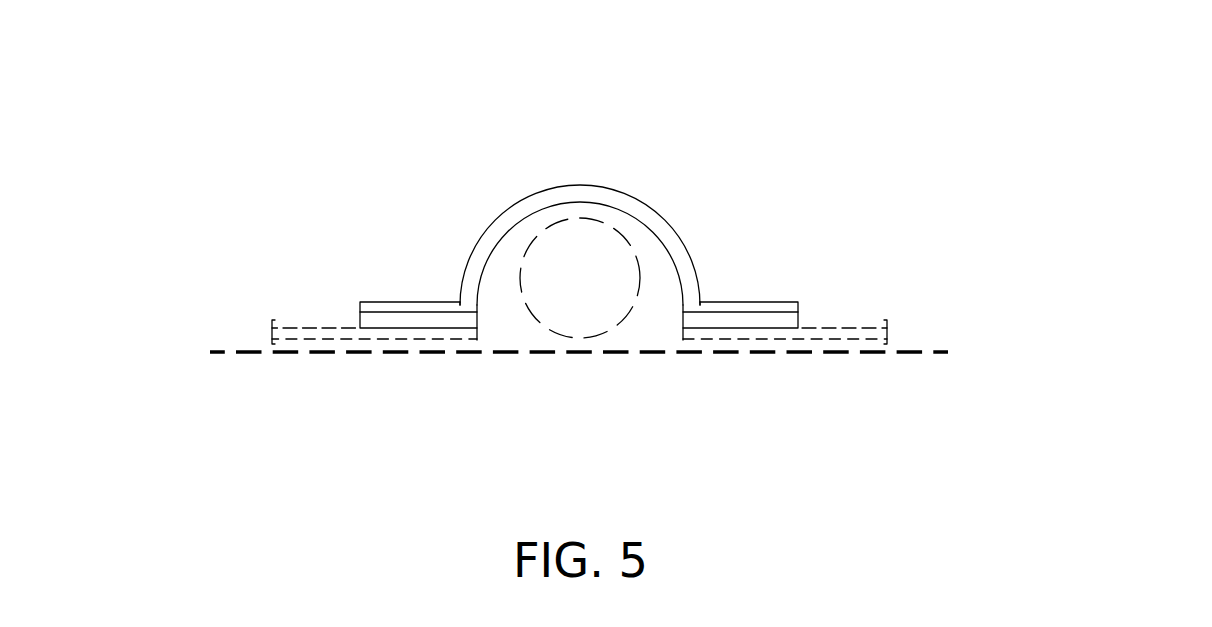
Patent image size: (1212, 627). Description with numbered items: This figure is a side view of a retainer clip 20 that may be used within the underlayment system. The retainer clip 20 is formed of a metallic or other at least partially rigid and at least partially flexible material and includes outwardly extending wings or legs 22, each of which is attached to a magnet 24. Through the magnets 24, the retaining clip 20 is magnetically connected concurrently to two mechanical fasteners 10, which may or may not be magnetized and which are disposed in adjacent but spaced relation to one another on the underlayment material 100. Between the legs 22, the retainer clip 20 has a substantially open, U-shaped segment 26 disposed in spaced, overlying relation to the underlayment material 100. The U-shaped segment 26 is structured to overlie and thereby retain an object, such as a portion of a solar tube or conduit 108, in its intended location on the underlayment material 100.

The mechanical fastener 10 is at (292, 328).
The retainer clip 20 is at (712, 148).
The wings or legs 22 is at (398, 302).
The magnet 24 is at (398, 320).
The U-shaped segment 26 is at (578, 193).
The underlayment material 100 is at (216, 348).
The solar tube or conduit 108 is at (543, 325).